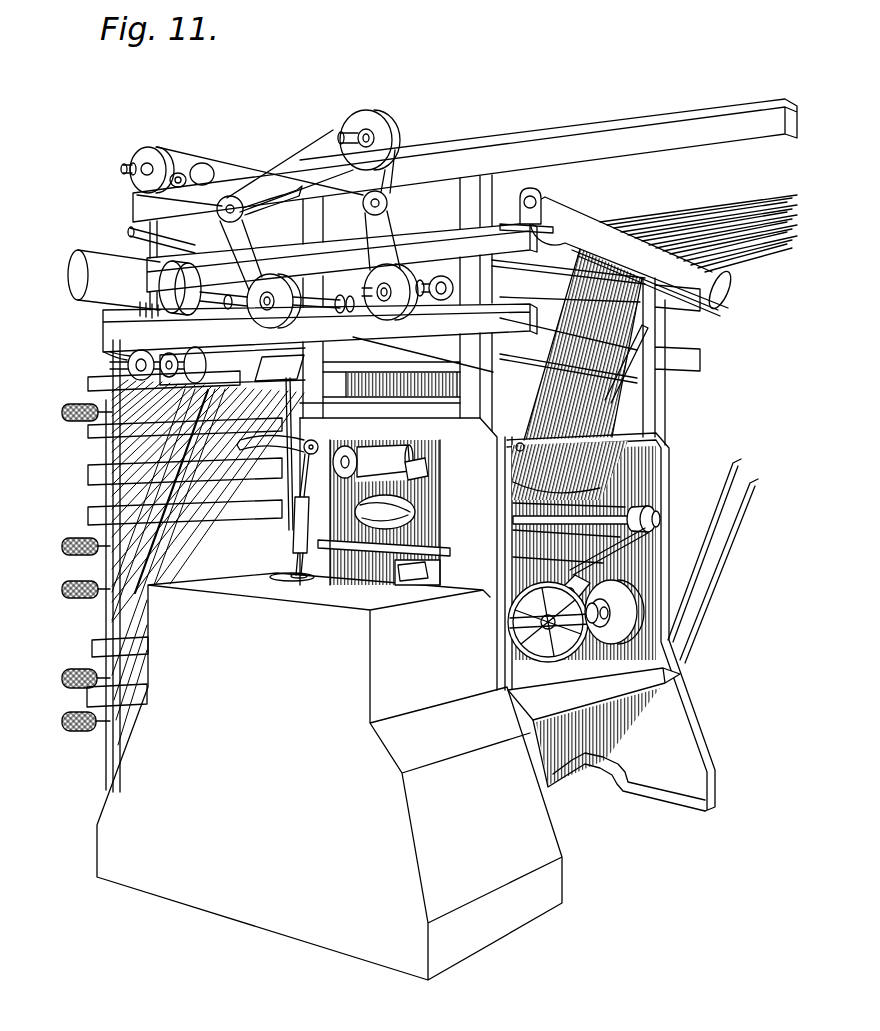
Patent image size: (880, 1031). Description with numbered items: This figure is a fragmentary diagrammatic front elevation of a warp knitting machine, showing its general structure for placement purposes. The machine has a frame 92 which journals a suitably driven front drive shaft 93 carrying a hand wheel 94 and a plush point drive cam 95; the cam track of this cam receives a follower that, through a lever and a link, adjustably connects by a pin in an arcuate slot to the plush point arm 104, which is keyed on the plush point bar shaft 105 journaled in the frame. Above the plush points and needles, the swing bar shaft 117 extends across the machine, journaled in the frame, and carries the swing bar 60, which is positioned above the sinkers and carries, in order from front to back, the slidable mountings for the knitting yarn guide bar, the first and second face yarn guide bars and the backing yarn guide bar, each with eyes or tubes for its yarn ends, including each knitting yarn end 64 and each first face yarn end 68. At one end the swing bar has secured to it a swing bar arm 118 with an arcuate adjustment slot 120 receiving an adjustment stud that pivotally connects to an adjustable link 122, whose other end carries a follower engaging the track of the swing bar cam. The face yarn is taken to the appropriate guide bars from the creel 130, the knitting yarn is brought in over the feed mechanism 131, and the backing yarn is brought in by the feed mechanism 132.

The swing bar 60 is at (427, 470).
The knitting yarn end 64 is at (730, 205).
The first face yarn end 68 is at (132, 452).
The frame 92 is at (507, 614).
The front drive shaft 93 is at (594, 694).
The hand wheel 94 is at (549, 662).
The plush point drive cam 95 is at (623, 597).
The plush point arm 104 is at (615, 558).
The plush point bar shaft 105 is at (590, 528).
The swing bar shaft 117 is at (349, 450).
The swing bar arm 118 is at (310, 428).
The arcuate adjustment slot 120 is at (278, 444).
The adjustable link 122 is at (292, 540).
The creel 130 is at (74, 423).
The feed mechanism 131 is at (618, 203).
The feed mechanism 132 is at (93, 348).